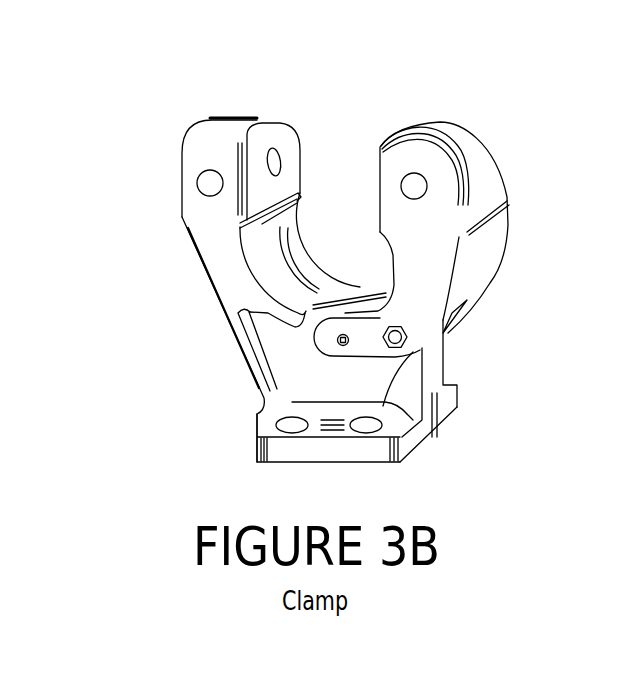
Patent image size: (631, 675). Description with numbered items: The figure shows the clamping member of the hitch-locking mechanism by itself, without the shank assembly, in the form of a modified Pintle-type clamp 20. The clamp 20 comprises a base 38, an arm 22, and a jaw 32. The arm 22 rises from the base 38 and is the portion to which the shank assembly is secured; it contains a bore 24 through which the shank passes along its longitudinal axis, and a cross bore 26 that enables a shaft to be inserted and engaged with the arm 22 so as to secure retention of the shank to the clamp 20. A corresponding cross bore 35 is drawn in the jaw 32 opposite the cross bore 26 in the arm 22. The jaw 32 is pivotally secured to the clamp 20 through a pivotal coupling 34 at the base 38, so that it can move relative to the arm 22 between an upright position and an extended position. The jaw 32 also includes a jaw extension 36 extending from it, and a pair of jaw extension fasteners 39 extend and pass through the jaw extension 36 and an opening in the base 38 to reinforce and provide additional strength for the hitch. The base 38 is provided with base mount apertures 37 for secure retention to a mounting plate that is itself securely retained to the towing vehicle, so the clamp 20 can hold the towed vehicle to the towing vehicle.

The clamp 20 is at (455, 446).
The arm 22 is at (217, 218).
The bore 24 is at (271, 147).
The cross bore 26 is at (212, 193).
The jaw 32 is at (466, 236).
The pivotal coupling 34 is at (413, 349).
The cross bore 35 is at (413, 177).
The jaw extension 36 is at (372, 348).
The base mount apertures 37 is at (340, 428).
The base 38 is at (262, 418).
The jaw extension fasteners 39 is at (333, 353).